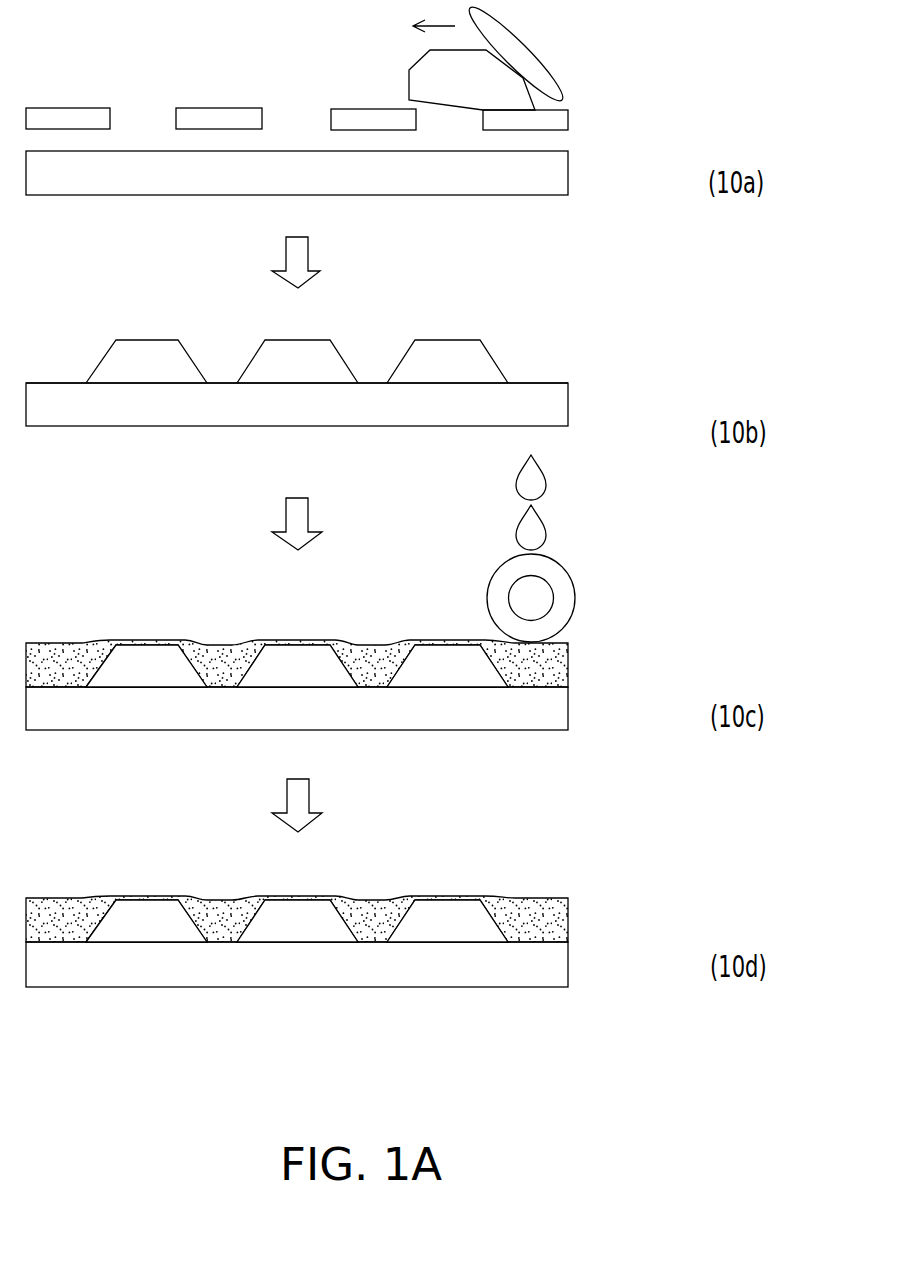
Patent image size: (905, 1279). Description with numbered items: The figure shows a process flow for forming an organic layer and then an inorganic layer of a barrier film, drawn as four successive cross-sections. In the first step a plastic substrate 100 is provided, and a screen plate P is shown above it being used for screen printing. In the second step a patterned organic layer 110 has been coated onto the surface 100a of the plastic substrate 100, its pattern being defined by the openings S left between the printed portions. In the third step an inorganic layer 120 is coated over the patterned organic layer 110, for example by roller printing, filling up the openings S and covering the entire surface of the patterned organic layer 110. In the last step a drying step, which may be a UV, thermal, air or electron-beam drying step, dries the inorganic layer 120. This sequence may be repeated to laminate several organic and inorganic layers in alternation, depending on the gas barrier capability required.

The plastic substrate 100 is at (556, 173).
The surface of the plastic substrate 100a is at (551, 372).
The patterned organic layer 110 is at (448, 352).
The inorganic layer 120 is at (553, 668).
The screen plate P is at (558, 120).
The openings S is at (227, 341).